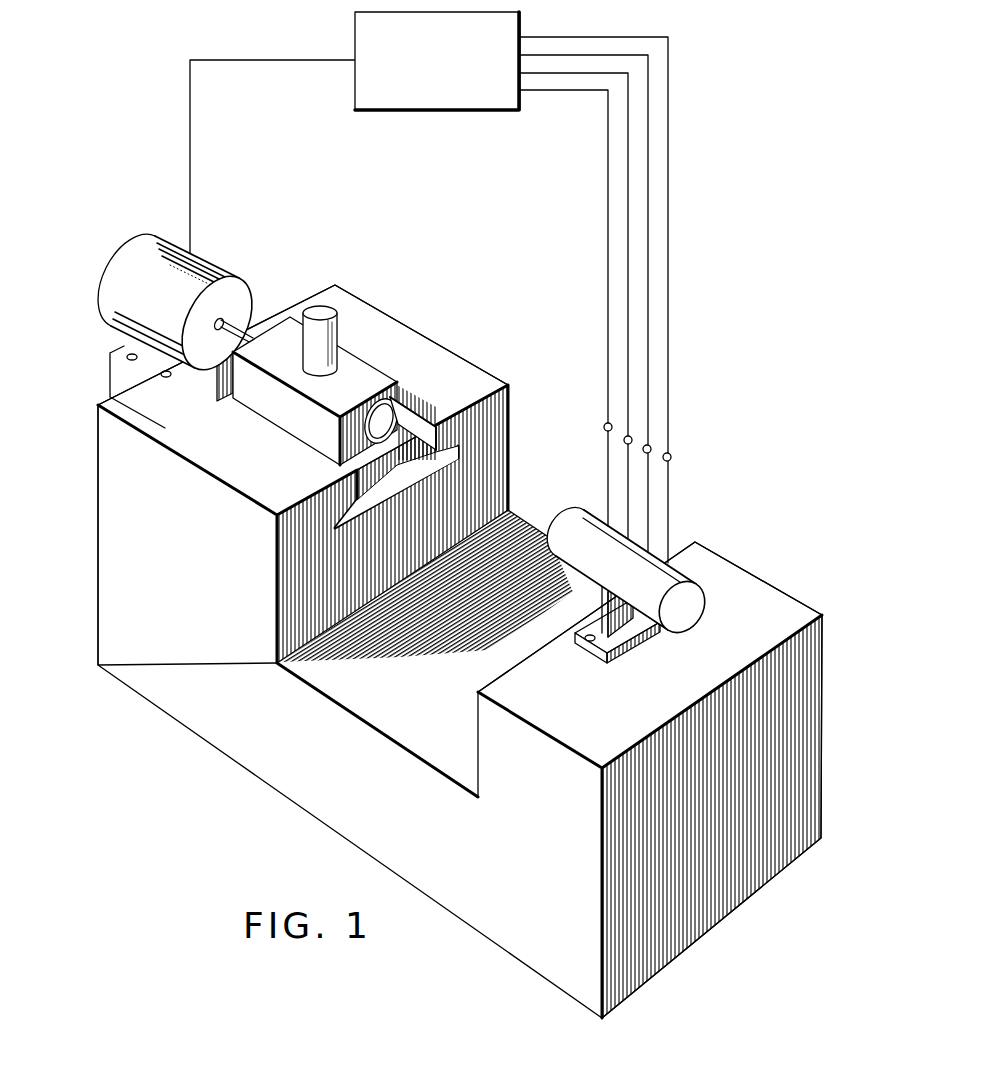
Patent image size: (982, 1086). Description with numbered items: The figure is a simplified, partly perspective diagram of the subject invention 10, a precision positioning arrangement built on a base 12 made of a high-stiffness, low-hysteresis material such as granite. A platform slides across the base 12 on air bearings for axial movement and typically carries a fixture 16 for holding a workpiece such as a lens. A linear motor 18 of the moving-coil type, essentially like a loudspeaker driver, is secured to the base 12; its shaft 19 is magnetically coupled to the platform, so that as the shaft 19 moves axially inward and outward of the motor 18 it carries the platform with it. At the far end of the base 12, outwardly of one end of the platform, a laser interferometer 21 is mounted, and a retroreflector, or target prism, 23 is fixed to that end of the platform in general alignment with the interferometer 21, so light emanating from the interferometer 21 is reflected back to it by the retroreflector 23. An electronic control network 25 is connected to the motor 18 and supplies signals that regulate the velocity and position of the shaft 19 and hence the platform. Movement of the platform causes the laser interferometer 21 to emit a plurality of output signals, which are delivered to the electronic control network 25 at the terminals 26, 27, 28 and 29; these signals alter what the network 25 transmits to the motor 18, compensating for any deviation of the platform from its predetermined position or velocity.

The subject invention 10 is at (237, 786).
The base 12 is at (110, 630).
The fixture 16 is at (337, 322).
The linear motor 18 is at (200, 257).
The shaft 19 is at (218, 333).
The laser interferometer 21 is at (684, 562).
The retroreflector 23 is at (403, 413).
The electronic control network 25 is at (397, 104).
The terminal 26 is at (672, 458).
The terminal 27 is at (651, 447).
The terminal 28 is at (624, 442).
The terminal 29 is at (604, 423).